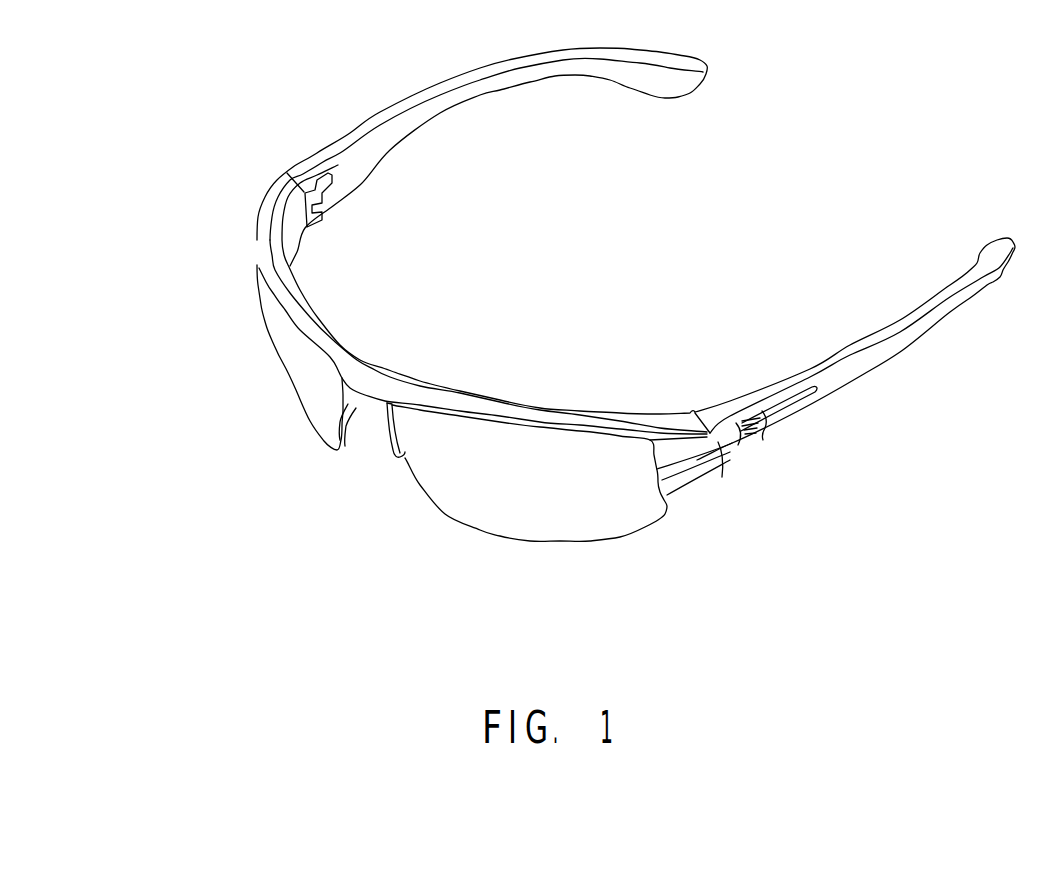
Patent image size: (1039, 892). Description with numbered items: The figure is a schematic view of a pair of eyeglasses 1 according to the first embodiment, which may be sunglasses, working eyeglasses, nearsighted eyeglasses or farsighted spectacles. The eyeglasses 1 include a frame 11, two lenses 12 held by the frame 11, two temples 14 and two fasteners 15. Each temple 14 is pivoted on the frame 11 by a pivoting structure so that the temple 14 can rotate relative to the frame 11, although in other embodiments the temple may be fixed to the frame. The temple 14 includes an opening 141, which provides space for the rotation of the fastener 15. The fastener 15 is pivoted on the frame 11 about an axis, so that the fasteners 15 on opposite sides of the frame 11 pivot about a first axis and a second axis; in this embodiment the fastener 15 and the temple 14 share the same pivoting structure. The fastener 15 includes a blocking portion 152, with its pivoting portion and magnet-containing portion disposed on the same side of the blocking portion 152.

The eyeglasses 1 is at (178, 108).
The frame 11 is at (369, 367).
The lens 12 is at (470, 512).
The temple 14 is at (904, 340).
The opening 141 is at (766, 418).
The fastener 15 is at (714, 443).
The blocking portion 152 is at (717, 464).